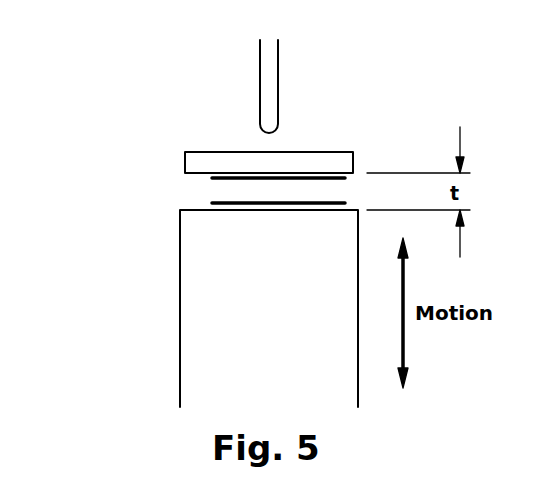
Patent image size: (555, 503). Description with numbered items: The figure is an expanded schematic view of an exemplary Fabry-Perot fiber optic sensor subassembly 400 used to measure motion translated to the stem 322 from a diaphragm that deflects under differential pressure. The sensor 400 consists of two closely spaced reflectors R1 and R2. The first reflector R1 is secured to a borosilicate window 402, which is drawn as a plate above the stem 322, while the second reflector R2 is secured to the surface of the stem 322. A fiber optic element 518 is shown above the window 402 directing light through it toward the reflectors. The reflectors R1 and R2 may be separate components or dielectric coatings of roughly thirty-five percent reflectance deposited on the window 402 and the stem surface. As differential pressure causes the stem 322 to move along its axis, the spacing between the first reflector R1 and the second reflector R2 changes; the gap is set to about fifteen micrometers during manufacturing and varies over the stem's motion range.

The Fabry-Perot fiber optic sensor subassembly 400 is at (92, 106).
The probe 518 is at (268, 76).
The borosilicate window 402 is at (335, 152).
The first reflector R1 is at (238, 178).
The second reflector R2 is at (223, 200).
The stem 322 is at (355, 210).